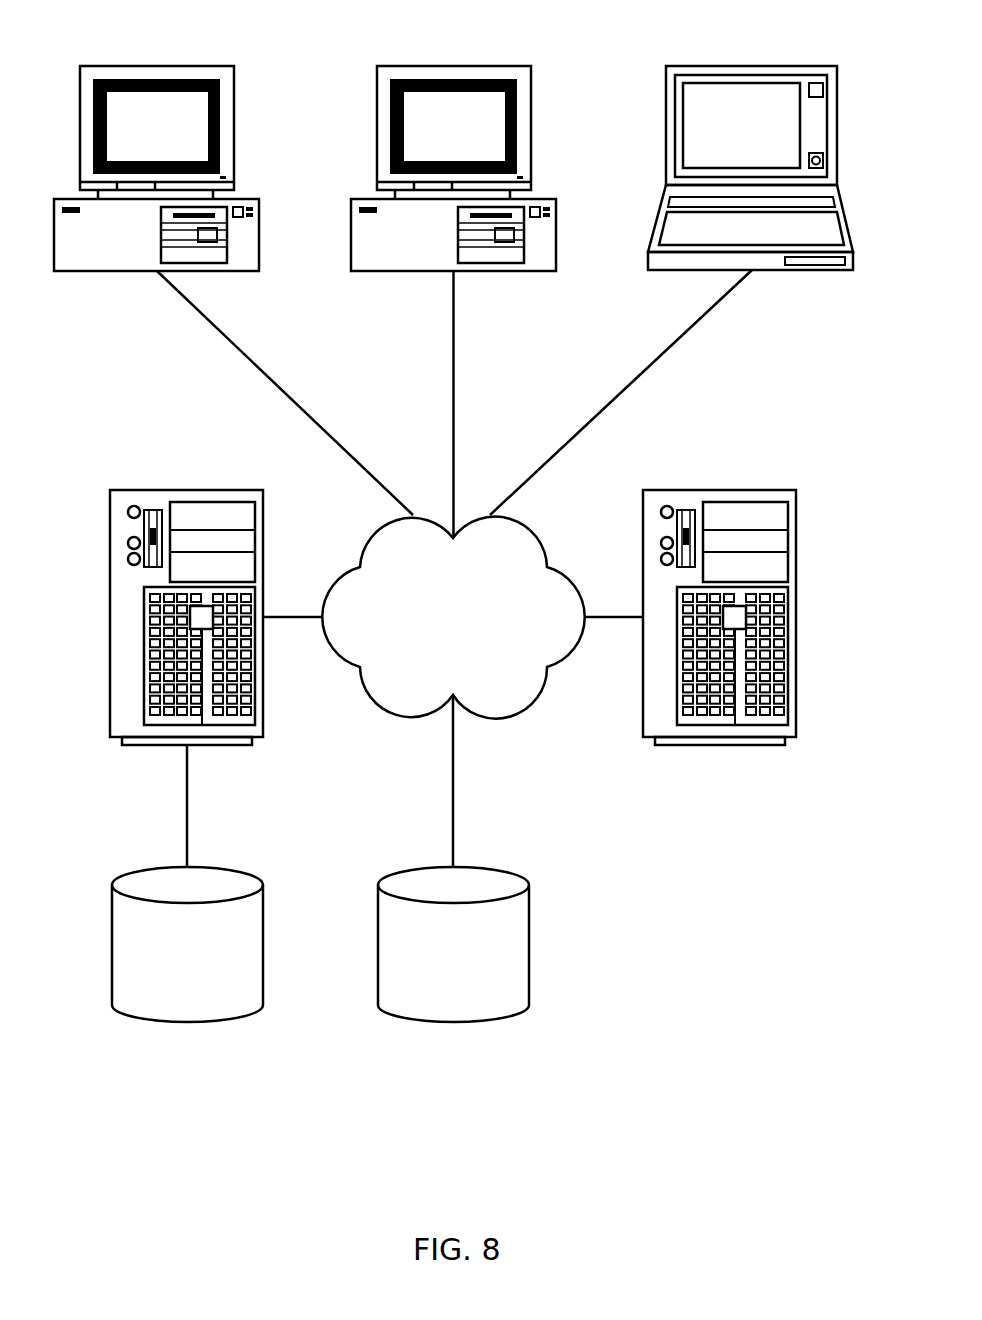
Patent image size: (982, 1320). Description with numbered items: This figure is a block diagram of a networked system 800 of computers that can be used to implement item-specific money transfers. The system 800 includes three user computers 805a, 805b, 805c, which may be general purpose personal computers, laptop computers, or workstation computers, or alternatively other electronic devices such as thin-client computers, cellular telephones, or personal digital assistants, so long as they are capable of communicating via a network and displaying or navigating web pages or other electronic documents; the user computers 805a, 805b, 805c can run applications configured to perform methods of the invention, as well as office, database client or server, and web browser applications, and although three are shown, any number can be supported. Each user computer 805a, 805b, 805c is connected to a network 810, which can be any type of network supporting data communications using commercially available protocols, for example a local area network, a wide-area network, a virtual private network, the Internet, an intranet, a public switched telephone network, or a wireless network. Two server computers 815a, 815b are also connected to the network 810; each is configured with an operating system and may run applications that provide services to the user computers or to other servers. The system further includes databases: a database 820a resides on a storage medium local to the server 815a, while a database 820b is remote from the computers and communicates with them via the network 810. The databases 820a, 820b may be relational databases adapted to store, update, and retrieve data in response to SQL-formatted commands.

The system 800 is at (453, 565).
The user computer 805a is at (258, 218).
The user computer 805b is at (350, 220).
The user computer 805c is at (665, 168).
The network 810 is at (493, 720).
The server computer 815a is at (110, 617).
The server computer 815b is at (797, 617).
The database 820a is at (187, 1022).
The database 820b is at (453, 1022).